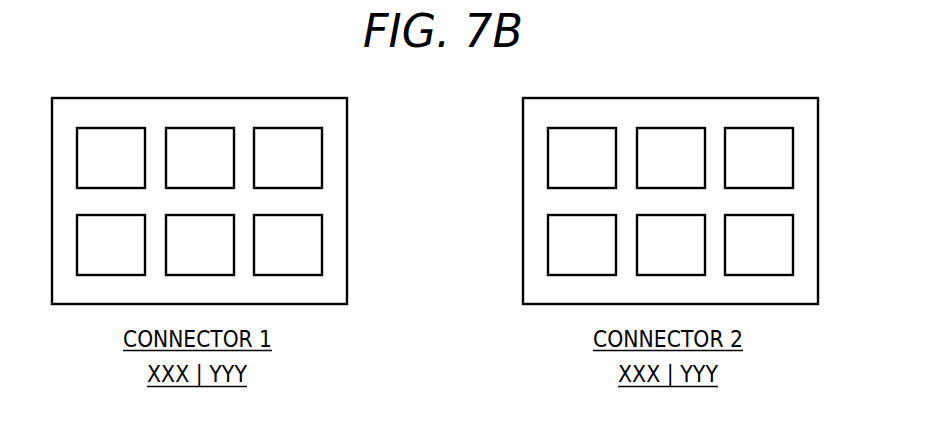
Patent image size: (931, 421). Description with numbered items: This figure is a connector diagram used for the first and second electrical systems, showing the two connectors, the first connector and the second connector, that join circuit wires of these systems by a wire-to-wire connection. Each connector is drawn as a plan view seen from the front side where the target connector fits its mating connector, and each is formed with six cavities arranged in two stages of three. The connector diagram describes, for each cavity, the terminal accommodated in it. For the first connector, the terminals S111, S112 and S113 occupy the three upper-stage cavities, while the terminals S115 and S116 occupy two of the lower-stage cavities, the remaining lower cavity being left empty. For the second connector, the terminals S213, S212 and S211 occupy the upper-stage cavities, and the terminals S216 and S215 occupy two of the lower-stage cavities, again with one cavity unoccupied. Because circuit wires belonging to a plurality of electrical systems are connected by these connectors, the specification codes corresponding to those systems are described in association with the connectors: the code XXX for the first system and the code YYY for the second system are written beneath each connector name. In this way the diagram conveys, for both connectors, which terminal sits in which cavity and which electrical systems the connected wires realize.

The terminal S111 is at (111, 158).
The terminal S112 is at (200, 158).
The terminal S113 is at (288, 158).
The terminal S115 is at (111, 245).
The terminal S116 is at (200, 245).
The terminal S213 is at (582, 158).
The terminal S212 is at (671, 158).
The terminal S211 is at (759, 158).
The terminal S216 is at (671, 245).
The terminal S215 is at (759, 245).